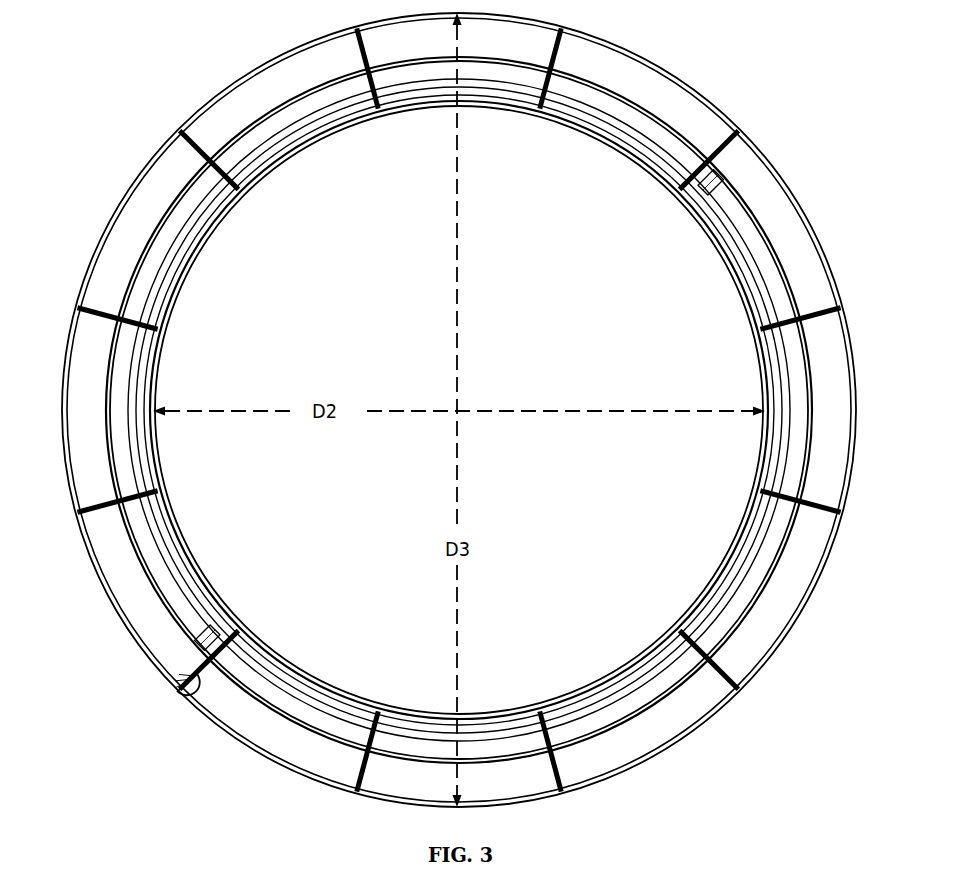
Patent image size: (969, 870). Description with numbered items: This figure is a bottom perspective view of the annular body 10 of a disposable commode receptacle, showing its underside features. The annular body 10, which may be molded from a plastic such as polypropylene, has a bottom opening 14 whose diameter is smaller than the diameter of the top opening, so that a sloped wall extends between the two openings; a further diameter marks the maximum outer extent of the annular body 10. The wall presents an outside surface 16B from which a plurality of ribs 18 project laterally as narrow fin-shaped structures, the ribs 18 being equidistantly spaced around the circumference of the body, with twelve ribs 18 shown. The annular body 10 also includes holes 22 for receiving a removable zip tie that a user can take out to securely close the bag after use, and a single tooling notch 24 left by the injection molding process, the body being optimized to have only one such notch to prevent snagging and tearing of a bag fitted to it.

The annular body 10 is at (114, 133).
The bottom opening 14 is at (614, 134).
The outside surface 16B is at (267, 138).
The ribs 18 is at (232, 178).
The holes 22 is at (726, 181).
The tooling notch 24 is at (167, 680).